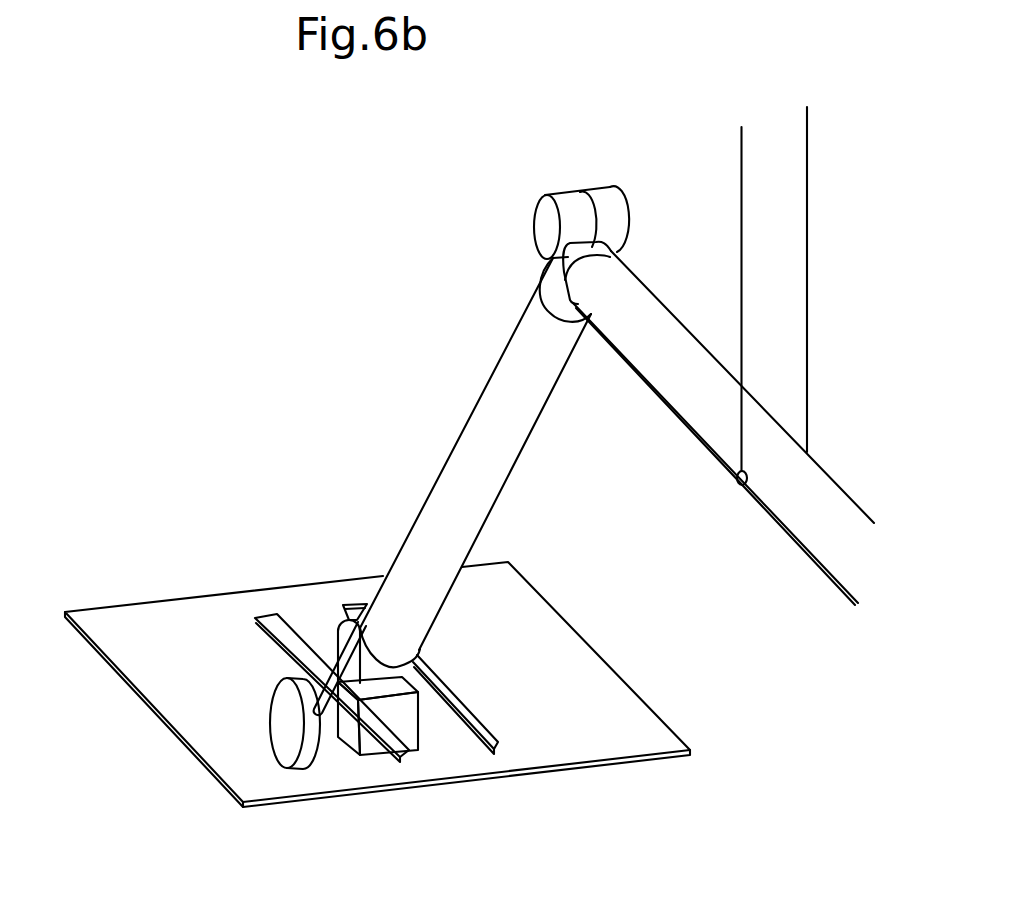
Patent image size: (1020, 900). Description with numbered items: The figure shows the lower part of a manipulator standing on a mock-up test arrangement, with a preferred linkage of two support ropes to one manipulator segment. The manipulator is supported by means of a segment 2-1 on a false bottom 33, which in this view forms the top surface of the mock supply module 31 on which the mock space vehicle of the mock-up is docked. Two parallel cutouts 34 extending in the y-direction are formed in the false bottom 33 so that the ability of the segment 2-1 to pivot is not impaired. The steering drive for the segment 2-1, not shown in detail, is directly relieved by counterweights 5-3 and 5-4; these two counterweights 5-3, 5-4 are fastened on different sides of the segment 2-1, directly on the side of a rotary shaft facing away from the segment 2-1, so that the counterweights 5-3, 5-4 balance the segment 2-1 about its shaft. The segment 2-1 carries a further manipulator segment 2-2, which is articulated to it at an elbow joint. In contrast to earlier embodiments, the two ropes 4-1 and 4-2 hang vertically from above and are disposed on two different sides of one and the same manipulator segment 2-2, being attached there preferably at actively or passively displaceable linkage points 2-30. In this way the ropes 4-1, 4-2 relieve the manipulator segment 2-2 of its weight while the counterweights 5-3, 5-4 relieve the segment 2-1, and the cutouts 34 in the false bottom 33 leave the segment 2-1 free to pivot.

The segment 2-1 is at (513, 453).
The manipulator segment 2-2 is at (663, 322).
The linkage points 2-30 is at (737, 481).
The rope 4-1 is at (740, 159).
The rope 4-2 is at (809, 160).
The counterweight 5-3 is at (280, 722).
The counterweight 5-4 is at (336, 628).
The mock supply module 31 is at (533, 775).
The false bottom 33 is at (600, 675).
The cutouts 34 is at (487, 747).